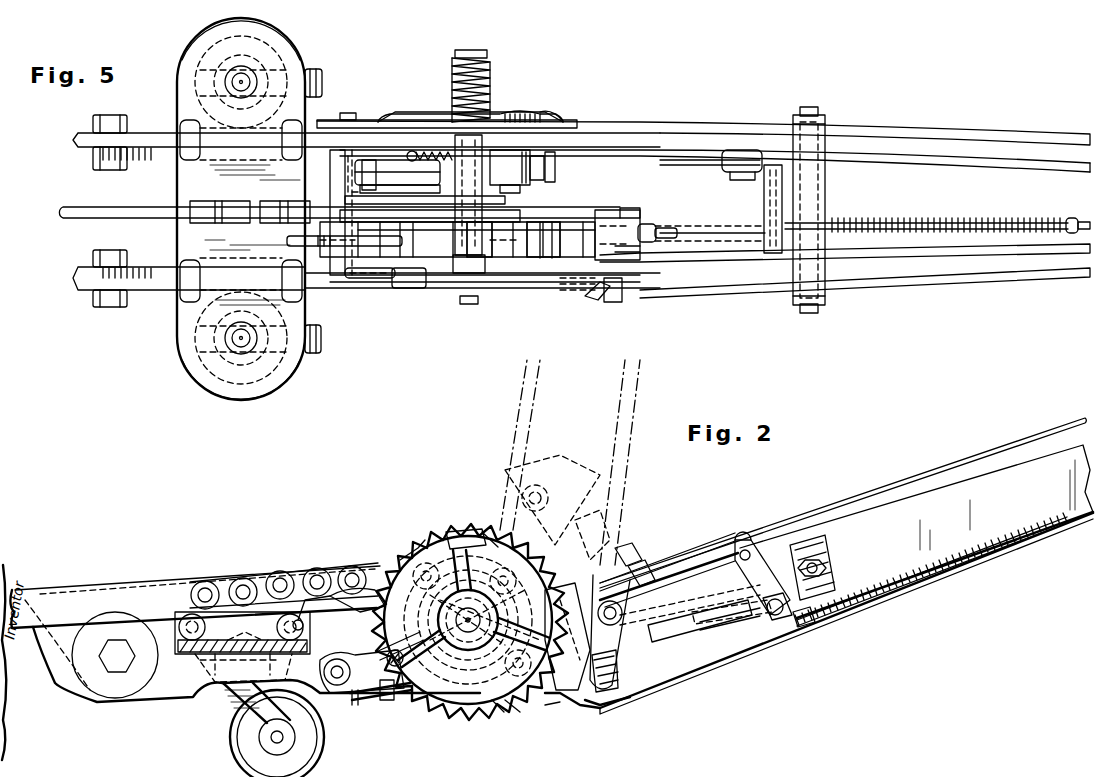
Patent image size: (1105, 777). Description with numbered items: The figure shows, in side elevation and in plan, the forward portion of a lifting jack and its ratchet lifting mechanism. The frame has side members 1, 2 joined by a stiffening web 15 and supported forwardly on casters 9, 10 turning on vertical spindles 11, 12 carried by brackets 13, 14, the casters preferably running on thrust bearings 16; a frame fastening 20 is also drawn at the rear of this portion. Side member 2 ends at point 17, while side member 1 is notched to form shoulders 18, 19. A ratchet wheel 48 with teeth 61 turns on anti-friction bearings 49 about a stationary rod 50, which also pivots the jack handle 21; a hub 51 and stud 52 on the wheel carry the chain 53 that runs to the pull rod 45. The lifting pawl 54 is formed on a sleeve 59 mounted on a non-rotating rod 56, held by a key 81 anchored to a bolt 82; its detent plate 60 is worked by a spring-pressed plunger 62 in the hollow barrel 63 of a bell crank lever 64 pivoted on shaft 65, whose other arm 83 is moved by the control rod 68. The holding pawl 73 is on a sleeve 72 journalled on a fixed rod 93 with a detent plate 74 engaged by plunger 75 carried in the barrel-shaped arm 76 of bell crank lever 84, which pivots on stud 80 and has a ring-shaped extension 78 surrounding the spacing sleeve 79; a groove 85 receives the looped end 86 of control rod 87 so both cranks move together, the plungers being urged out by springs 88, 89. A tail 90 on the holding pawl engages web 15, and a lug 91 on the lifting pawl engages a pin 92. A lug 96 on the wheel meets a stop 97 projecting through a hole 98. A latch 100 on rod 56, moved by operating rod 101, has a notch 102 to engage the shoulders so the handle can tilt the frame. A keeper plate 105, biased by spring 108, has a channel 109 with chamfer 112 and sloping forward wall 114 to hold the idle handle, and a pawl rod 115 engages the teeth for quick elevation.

In FIG. 5, the side member 1 is at (90, 288).
In FIG. 5, the side member 2 is at (150, 134).
In FIG. 2, the side member 2 is at (146, 700).
In FIG. 5, the caster 9 is at (320, 343).
In FIG. 5, the caster 10 is at (316, 82).
In FIG. 2, the caster 10 is at (236, 748).
In FIG. 5, the vertical spindle 11 is at (228, 337).
In FIG. 5, the vertical spindle 12 is at (230, 86).
In FIG. 2, the vertical spindle 12 is at (246, 638).
In FIG. 5, the bracket 13 is at (180, 354).
In FIG. 5, the bracket 14 is at (182, 88).
In FIG. 5, the stiffening web 15 is at (184, 240).
In FIG. 2, the stiffening web 15 is at (192, 657).
In FIG. 2, the thrust bearing 16 is at (208, 690).
In FIG. 5, the forward end of frame member 2 17 is at (538, 136).
In FIG. 2, the forward end of frame member 2 17 is at (542, 703).
In FIG. 5, the shoulder 18 is at (573, 286).
In FIG. 2, the shoulder 18 is at (595, 632).
In FIG. 2, the shoulder 19 is at (570, 665).
In FIG. 5, the bolt / hub 20 is at (88, 152).
In FIG. 2, the bolt / hub 20 is at (58, 656).
In FIG. 5, the jack handle 21 is at (748, 122).
In FIG. 2, the jack handle 21 is at (850, 542).
In FIG. 5, the pull rod 45 is at (70, 219).
In FIG. 2, the pull rod 45 is at (82, 596).
In FIG. 5, the ratchet wheel 48 is at (552, 226).
In FIG. 2, the ratchet wheel 48 is at (428, 538).
In FIG. 2, the anti-friction bearings 49 is at (440, 616).
In FIG. 2, the stationary rod 50 is at (500, 580).
In FIG. 5, the hub 51 is at (446, 198).
In FIG. 5, the stud 52 is at (518, 203).
In FIG. 2, the stud 52 is at (498, 606).
In FIG. 5, the chain 53 is at (206, 205).
In FIG. 2, the chain 53 is at (214, 581).
In FIG. 5, the lifting pawl 54 is at (545, 246).
In FIG. 2, the lifting pawl 54 is at (556, 710).
In FIG. 5, the stationary rod 56 is at (616, 302).
In FIG. 2, the stationary rod 56 is at (548, 520).
In FIG. 5, the sleeve 59 is at (624, 250).
In FIG. 5, the detent plate 60 is at (646, 226).
In FIG. 2, the detent plate 60 is at (640, 566).
In FIG. 5, the teeth 61 is at (494, 245).
In FIG. 2, the teeth 61 is at (480, 522).
In FIG. 5, the spring-pressed plunger 62 is at (668, 226).
In FIG. 2, the spring-pressed plunger 62 is at (652, 655).
In FIG. 5, the hollow barrel 63 is at (702, 226).
In FIG. 2, the hollow barrel 63 is at (692, 655).
In FIG. 5, the bell crank lever 64 is at (792, 225).
In FIG. 2, the bell crank lever 64 is at (786, 634).
In FIG. 5, the shaft 65 is at (766, 205).
In FIG. 2, the shaft 65 is at (772, 660).
In FIG. 5, the control rod 68 is at (900, 160).
In FIG. 2, the control rod 68 is at (788, 516).
In FIG. 5, the sleeve 72 is at (336, 186).
In FIG. 5, the holding pawl 73 is at (457, 239).
In FIG. 2, the holding pawl 73 is at (362, 578).
In FIG. 5, the detent plate 74 is at (396, 166).
In FIG. 2, the detent plate 74 is at (353, 700).
In FIG. 5, the spring-pressed plunger 75 is at (378, 160).
In FIG. 2, the spring-pressed plunger 75 is at (380, 696).
In FIG. 5, the barrel-shaped arm 76 is at (398, 182).
In FIG. 2, the barrel-shaped arm 76 is at (406, 700).
In FIG. 5, the ring-shaped extension 78 is at (561, 167).
In FIG. 2, the ring-shaped extension 78 is at (467, 604).
In FIG. 5, the spacing sleeve 79 is at (458, 200).
In FIG. 5, the stud 80 is at (512, 191).
In FIG. 2, the stud 80 is at (512, 712).
In FIG. 5, the key 81 is at (750, 292).
In FIG. 2, the key 81 is at (720, 550).
In FIG. 5, the bolt 82 is at (812, 306).
In FIG. 5, the arm 83 is at (757, 170).
In FIG. 2, the arm 83 is at (762, 556).
In FIG. 5, the bell crank lever 84 is at (531, 170).
In FIG. 2, the bell crank lever 84 is at (500, 710).
In FIG. 5, the groove 85 is at (428, 150).
In FIG. 5, the looped end 86 is at (420, 152).
In FIG. 2, the looped end 86 is at (438, 604).
In FIG. 5, the control rod 87 is at (672, 150).
In FIG. 2, the control rod 87 is at (738, 530).
In FIG. 2, the spring 88 is at (722, 648).
In FIG. 2, the spring 89 is at (460, 710).
In FIG. 5, the tail 90 is at (288, 241).
In FIG. 2, the tail 90 is at (300, 588).
In FIG. 5, the lug 91 is at (630, 211).
In FIG. 5, the pin 92 is at (604, 212).
In FIG. 2, the pin 92 is at (622, 572).
In FIG. 5, the fixed rod 93 is at (352, 120).
In FIG. 2, the fixed rod 93 is at (334, 688).
In FIG. 5, the lug 96 is at (490, 272).
In FIG. 2, the lug 96 is at (460, 530).
In FIG. 5, the stop 97 is at (362, 270).
In FIG. 2, the stop 97 is at (387, 702).
In FIG. 5, the hole 98 is at (420, 288).
In FIG. 2, the hole 98 is at (398, 660).
In FIG. 2, the latch 100 is at (618, 660).
In FIG. 5, the operating rod 101 is at (935, 255).
In FIG. 2, the operating rod 101 is at (692, 550).
In FIG. 5, the notch 102 is at (592, 300).
In FIG. 2, the notch 102 is at (600, 703).
In FIG. 5, the keeper plate 105 is at (364, 168).
In FIG. 2, the keeper plate 105 is at (588, 525).
In FIG. 5, the spring 108 is at (490, 66).
In FIG. 5, the channel 109 is at (522, 111).
In FIG. 5, the chamfer 112 is at (392, 113).
In FIG. 5, the forward wall 114 is at (548, 116).
In FIG. 5, the pawl rod 115 is at (1080, 219).
In FIG. 2, the pawl rod 115 is at (692, 676).